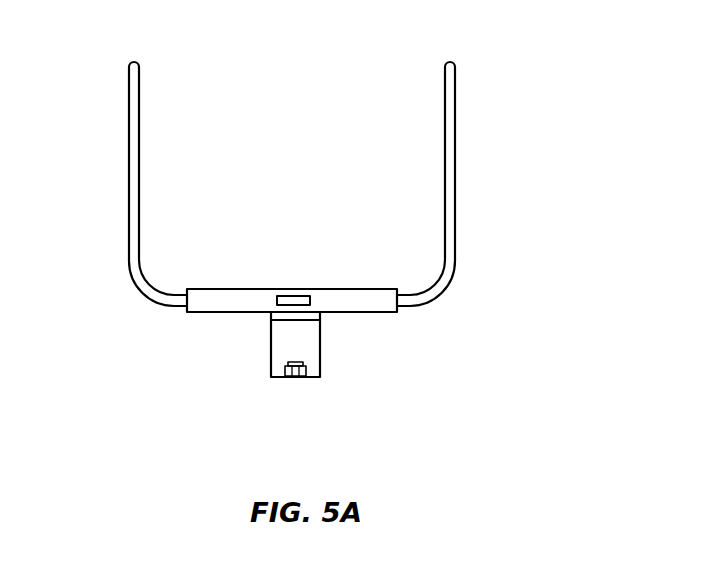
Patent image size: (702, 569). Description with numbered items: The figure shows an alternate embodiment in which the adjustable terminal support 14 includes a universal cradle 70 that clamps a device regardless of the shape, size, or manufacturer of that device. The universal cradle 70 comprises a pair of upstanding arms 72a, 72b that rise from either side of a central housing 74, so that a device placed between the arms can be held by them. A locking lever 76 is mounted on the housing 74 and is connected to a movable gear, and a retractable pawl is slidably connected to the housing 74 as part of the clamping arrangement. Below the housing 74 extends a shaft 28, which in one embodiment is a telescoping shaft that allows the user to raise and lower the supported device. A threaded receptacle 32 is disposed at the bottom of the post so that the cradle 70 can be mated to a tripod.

The universal cradle 70 is at (319, 181).
The arm 72a is at (129, 180).
The arm 72b is at (455, 199).
The housing 74 is at (370, 312).
The locking lever 76 is at (298, 300).
The adjustable terminal support 14 is at (227, 361).
The shaft 28 is at (282, 340).
The threaded receptacle 32 is at (295, 377).